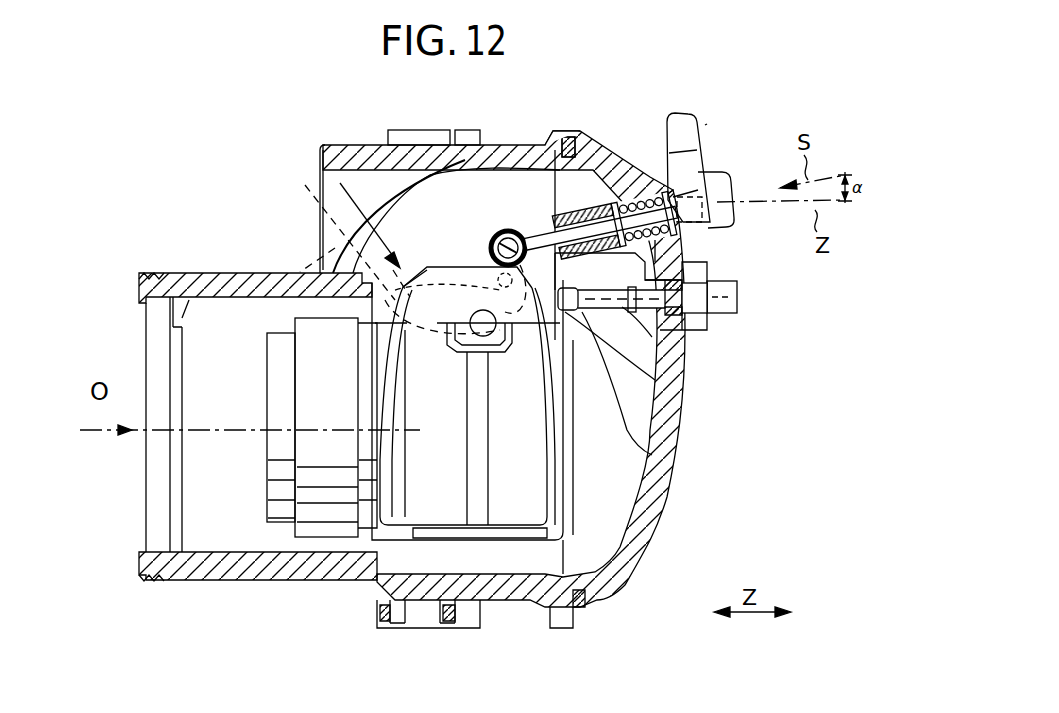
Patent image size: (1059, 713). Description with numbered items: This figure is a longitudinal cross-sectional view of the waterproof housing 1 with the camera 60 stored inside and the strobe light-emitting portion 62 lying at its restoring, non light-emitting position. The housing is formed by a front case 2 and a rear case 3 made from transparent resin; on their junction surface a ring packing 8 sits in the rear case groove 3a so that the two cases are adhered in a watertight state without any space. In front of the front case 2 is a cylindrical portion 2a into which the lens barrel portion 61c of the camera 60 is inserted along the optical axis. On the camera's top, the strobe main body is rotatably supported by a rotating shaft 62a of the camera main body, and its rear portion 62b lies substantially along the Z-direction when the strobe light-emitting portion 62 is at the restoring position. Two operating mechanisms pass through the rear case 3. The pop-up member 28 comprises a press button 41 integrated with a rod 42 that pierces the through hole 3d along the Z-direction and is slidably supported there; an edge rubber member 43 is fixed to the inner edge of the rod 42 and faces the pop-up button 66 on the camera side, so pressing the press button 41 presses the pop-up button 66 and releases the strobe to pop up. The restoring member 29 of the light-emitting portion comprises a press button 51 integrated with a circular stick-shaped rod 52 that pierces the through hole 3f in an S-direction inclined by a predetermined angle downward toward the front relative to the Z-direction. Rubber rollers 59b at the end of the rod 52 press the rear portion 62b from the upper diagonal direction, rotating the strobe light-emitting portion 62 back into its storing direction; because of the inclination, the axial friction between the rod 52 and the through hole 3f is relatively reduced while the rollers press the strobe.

The waterproof housing 1 is at (192, 186).
The front case 2 is at (395, 185).
The cylindrical portion 2a is at (203, 272).
The rear case 3 is at (598, 152).
The rear case groove 3a is at (568, 137).
The through hole 3d is at (667, 264).
The through hole 3f is at (610, 213).
The ring packing 8 is at (550, 131).
The pop-up member 28 is at (750, 297).
The restoring member of the light-emitting portion 29 is at (698, 130).
The press button 41 is at (740, 309).
The rod 42 is at (632, 336).
The edge rubber member 43 is at (600, 340).
The press button 51 is at (683, 112).
The rod 52 is at (648, 250).
The rubber rollers 59b is at (510, 230).
The camera 60 is at (367, 265).
The lens barrel portion 61c is at (328, 505).
The strobe light-emitting portion 62 is at (310, 185).
The rotating shaft 62a is at (332, 287).
The rear portion of the strobe main body 62b is at (390, 250).
The pop-up button 66 is at (650, 455).